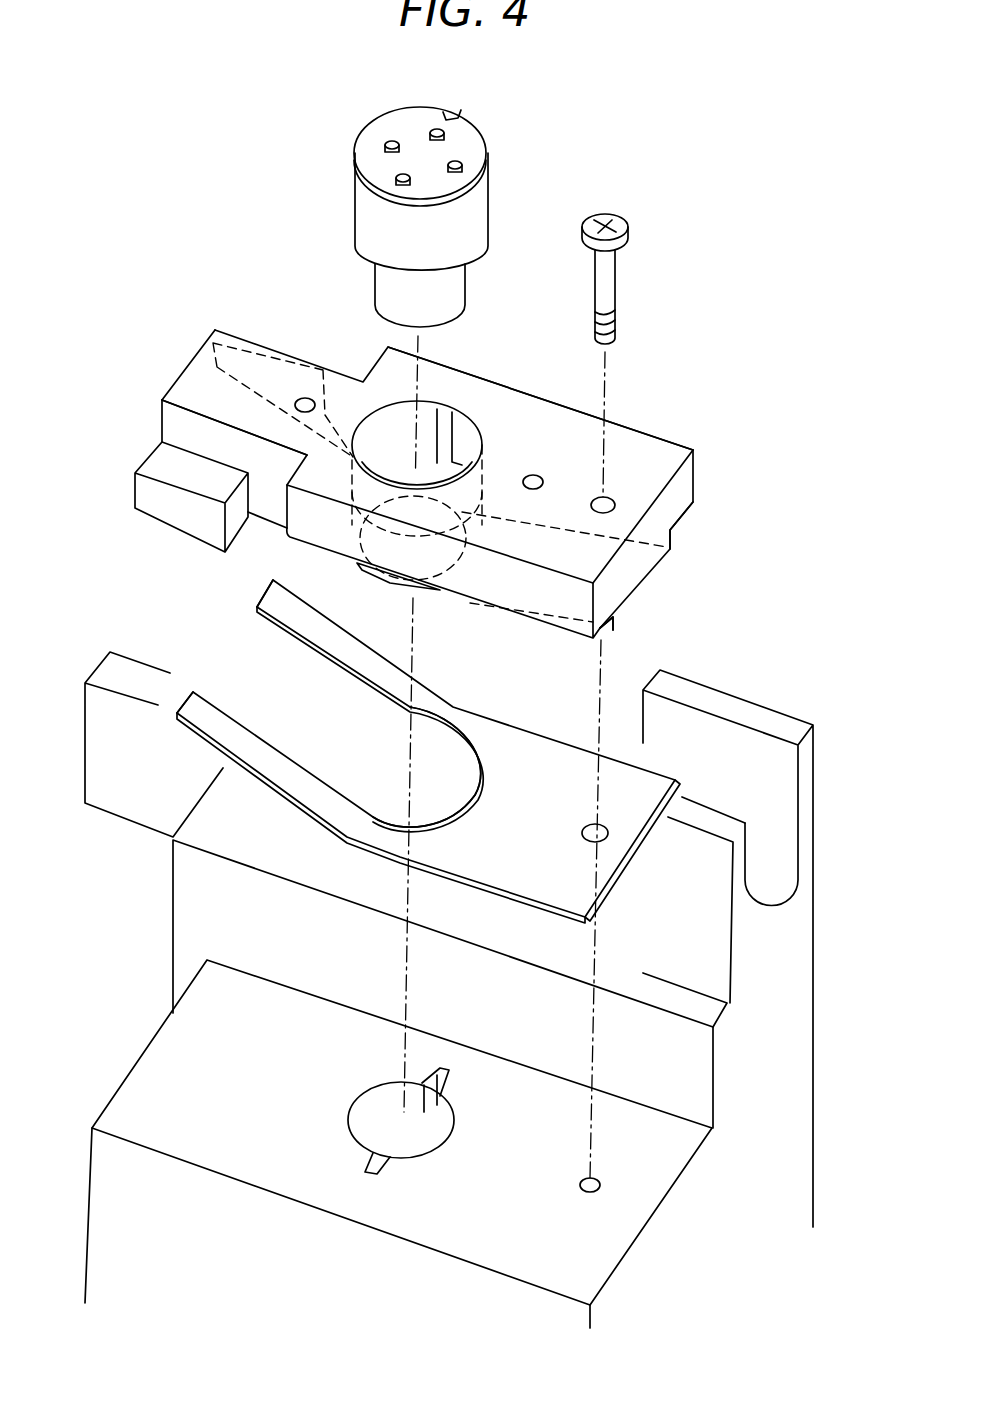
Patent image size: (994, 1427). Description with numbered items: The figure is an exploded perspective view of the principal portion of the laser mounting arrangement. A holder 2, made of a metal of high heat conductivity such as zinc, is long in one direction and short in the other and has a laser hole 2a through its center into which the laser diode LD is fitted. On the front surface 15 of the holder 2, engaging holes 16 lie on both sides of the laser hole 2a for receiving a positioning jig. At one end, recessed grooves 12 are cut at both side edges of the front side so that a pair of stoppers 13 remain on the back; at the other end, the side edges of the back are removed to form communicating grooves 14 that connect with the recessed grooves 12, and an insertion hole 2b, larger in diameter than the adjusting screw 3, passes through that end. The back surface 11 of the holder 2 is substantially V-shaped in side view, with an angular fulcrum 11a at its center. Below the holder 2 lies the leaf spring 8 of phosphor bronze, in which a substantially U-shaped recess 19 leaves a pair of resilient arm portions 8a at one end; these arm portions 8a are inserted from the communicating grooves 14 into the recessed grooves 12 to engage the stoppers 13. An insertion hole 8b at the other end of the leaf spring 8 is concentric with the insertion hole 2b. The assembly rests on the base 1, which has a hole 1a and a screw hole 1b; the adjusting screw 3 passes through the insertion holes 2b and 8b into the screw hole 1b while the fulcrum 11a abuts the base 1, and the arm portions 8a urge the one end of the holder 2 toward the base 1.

The laser diode LD is at (365, 212).
The adjusting screw 3 is at (612, 291).
The holder 2 is at (426, 482).
The recessed grooves 12 is at (215, 336).
The stoppers 13 is at (168, 508).
The engaging holes 16 is at (295, 405).
The front surface 15 is at (510, 398).
The laser hole 2a is at (450, 430).
The insertion hole 2b is at (606, 497).
The communicating grooves 14 is at (690, 523).
The fulcrum 11a is at (370, 583).
The back surface 11 is at (421, 598).
The leaf spring 8 is at (428, 749).
The resilient arm portions 8a is at (265, 594).
The recess 19 is at (355, 735).
The insertion hole 8b is at (585, 830).
The base 1 is at (449, 990).
The positioning hole 1a is at (362, 1112).
The screw hole 1b is at (582, 1182).